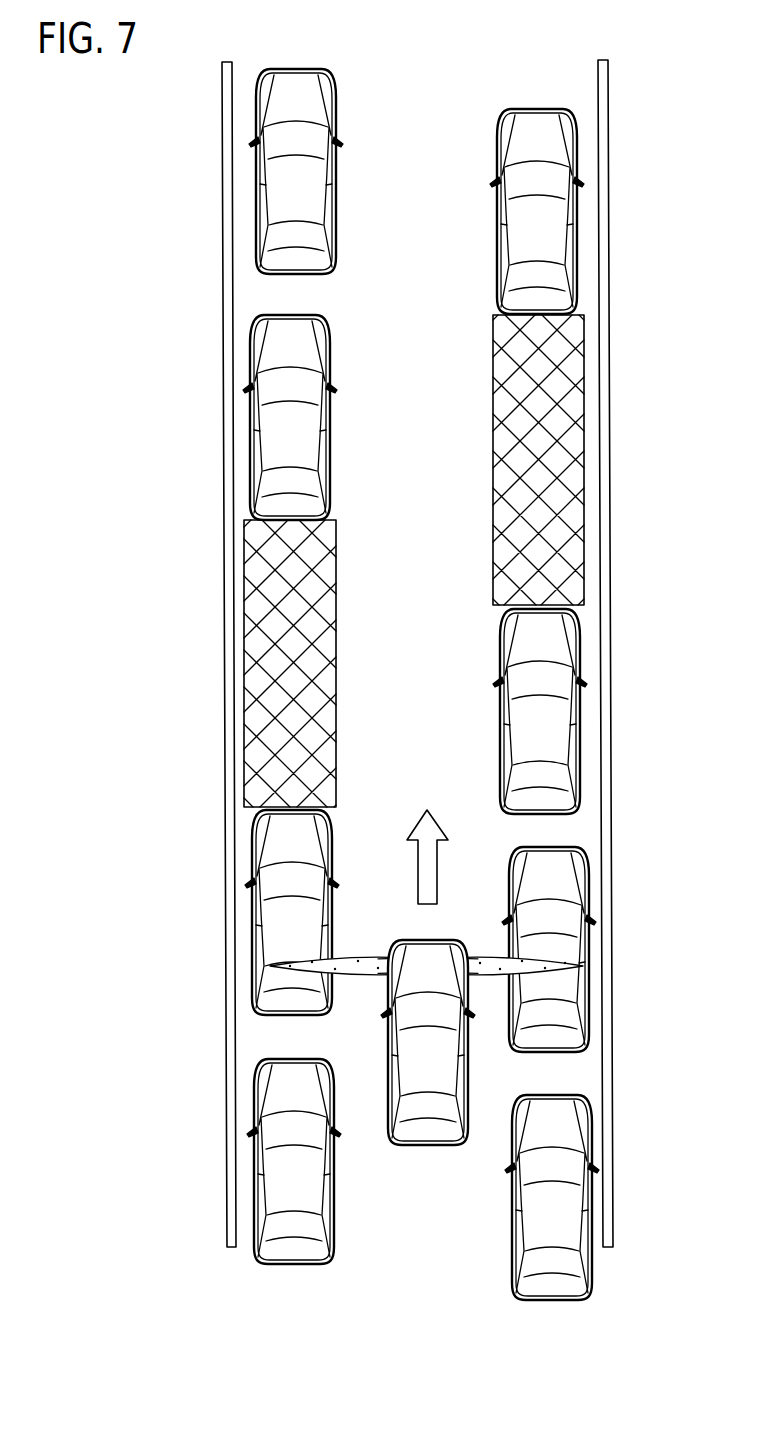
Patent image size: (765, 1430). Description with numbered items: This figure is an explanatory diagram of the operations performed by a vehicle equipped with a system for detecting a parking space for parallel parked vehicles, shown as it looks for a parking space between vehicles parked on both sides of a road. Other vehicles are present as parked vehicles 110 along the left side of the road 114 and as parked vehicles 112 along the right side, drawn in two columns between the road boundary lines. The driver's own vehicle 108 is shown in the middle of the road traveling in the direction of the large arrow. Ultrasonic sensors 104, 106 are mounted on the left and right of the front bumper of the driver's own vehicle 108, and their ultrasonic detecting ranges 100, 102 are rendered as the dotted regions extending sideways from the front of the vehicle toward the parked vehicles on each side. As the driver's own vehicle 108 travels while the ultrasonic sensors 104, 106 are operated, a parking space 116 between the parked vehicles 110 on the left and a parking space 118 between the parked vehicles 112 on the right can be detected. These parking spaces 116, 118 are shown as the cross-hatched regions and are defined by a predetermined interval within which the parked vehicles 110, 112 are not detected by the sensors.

The ultrasonic detecting range 100 is at (357, 975).
The ultrasonic detecting range 102 is at (502, 975).
The ultrasonic sensor 104 is at (384, 967).
The ultrasonic sensor 106 is at (485, 966).
The driver's own vehicle 108 is at (430, 1140).
The parked vehicles 110 is at (257, 189).
The parked vehicles 112 is at (576, 220).
The road 114 is at (437, 62).
The parking space 116 is at (253, 731).
The parking space 118 is at (577, 398).